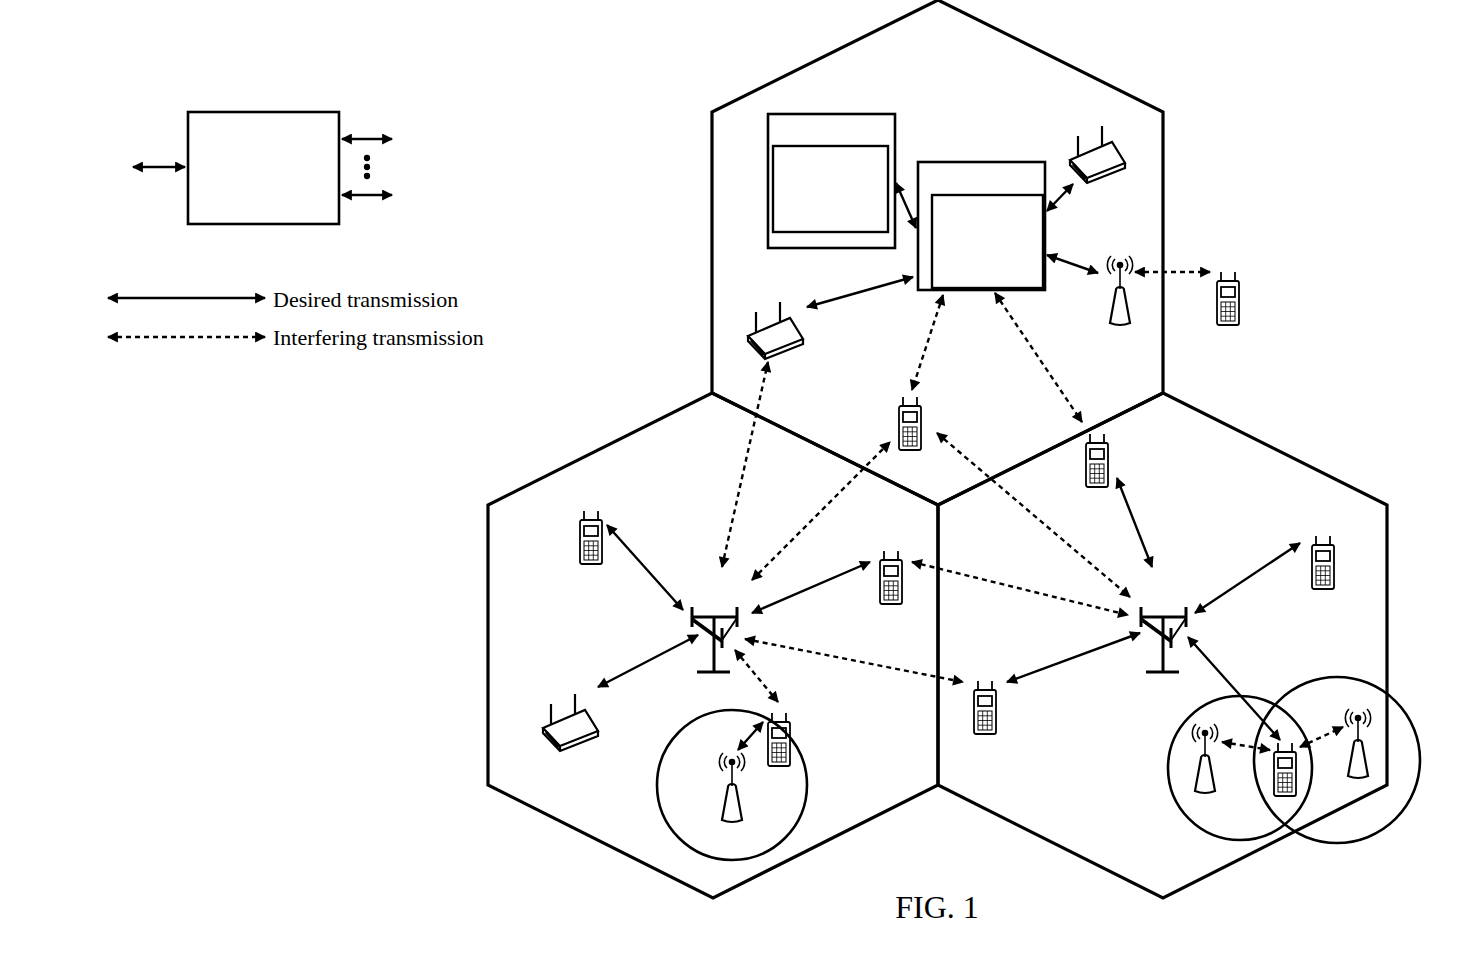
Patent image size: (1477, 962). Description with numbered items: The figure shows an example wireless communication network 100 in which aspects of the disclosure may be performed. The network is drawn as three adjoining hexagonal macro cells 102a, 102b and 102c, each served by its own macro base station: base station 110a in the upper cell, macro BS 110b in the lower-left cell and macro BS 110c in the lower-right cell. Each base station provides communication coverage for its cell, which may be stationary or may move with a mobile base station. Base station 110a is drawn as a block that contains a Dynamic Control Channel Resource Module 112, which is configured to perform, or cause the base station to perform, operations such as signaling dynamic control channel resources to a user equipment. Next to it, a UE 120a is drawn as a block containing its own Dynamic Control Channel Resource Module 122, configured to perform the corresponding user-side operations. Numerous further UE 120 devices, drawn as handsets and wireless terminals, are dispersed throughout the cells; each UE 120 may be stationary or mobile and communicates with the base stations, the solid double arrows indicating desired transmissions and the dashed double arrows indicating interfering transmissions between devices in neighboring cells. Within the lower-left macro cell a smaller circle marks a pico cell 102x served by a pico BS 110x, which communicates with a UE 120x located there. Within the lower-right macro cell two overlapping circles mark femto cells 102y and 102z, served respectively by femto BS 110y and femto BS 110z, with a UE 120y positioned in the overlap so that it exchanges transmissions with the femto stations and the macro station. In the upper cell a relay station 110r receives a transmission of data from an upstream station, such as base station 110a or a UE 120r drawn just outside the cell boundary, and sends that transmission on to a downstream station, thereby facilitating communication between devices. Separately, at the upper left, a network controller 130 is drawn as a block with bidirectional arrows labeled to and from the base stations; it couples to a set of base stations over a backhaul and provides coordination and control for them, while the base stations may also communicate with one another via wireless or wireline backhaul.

The wireless communication network 100 is at (1313, 72).
The network controller 130 is at (262, 112).
The macro cell 102a is at (1050, 52).
The macro cell 102b is at (602, 447).
The macro cell 102c is at (1278, 447).
The UE 120a is at (810, 165).
The Dynamic Control Channel Resource Module 122 is at (772, 210).
The base station 110a is at (967, 227).
The Dynamic Control Channel Resource Module 112 is at (934, 290).
The UE 120 is at (1108, 143).
The relay station 110r is at (1108, 309).
The UE 120r is at (1240, 310).
The macro BS 110b is at (708, 612).
The macro BS 110c is at (1161, 612).
The pico cell 102x is at (678, 728).
The pico BS 110x is at (742, 810).
The UE 120x is at (795, 727).
The femto cell 102y is at (1173, 730).
The femto BS 110y is at (1216, 790).
The UE 120y is at (1274, 787).
The femto cell 102z is at (1335, 672).
The femto BS 110z is at (1368, 778).